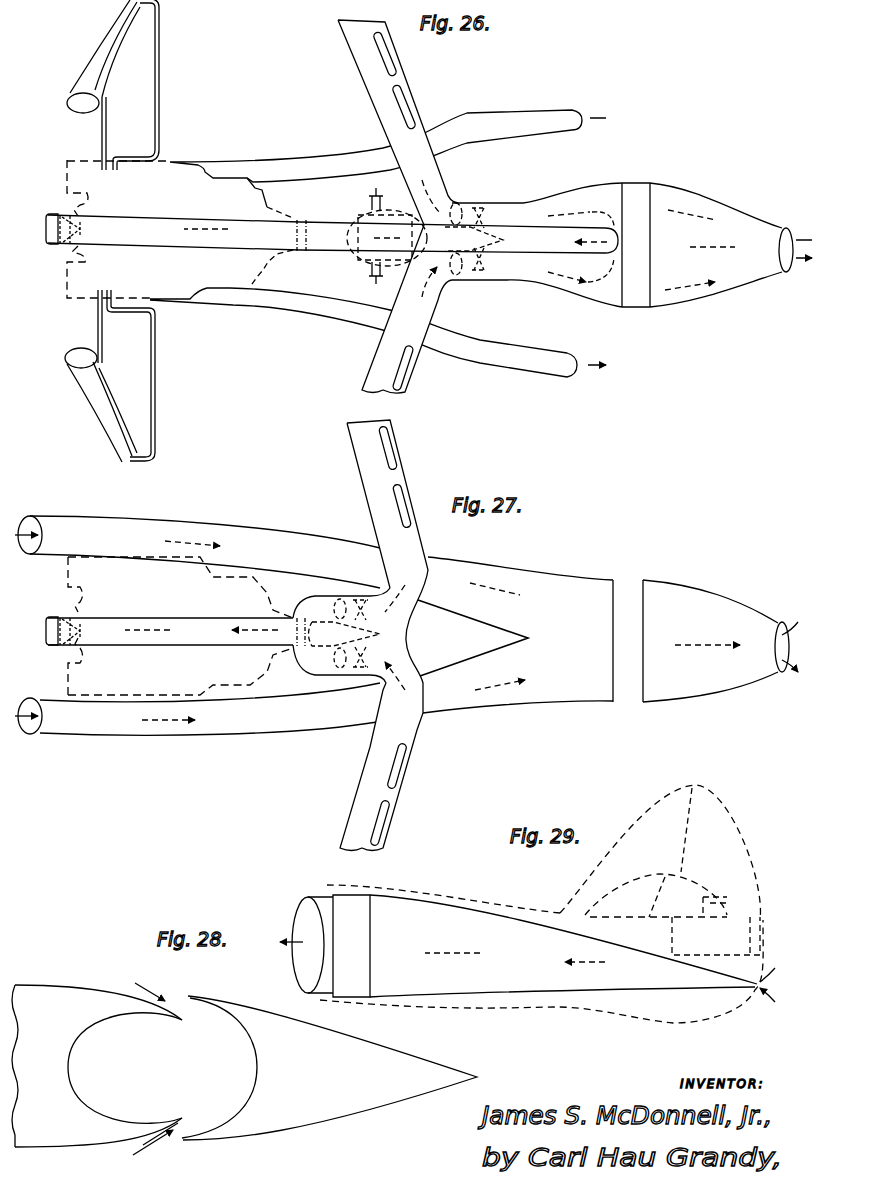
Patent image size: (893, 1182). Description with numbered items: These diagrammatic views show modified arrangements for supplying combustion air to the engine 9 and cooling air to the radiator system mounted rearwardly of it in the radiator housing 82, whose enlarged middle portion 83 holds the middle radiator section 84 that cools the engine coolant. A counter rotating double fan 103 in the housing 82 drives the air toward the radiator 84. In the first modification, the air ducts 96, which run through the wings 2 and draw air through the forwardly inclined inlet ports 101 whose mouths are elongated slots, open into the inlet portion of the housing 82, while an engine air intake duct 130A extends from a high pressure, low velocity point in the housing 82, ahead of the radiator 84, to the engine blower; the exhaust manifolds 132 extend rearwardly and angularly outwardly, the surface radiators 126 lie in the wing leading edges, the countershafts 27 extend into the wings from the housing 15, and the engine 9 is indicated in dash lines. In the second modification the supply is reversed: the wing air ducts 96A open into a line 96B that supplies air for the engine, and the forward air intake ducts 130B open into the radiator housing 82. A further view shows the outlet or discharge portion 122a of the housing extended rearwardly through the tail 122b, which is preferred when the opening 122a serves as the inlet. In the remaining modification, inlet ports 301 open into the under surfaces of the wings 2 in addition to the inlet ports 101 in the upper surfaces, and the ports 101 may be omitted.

In FIG. 28, the wings 2 is at (390, 1041).
In FIG. 26, the engine 9 is at (67, 298).
In FIG. 27, the engine 9 is at (278, 607).
In FIG. 26, the housing 15 is at (357, 262).
In FIG. 26, the countershafts 27 is at (370, 199).
In FIG. 26, the radiator housing 82 is at (515, 278).
In FIG. 27, the radiator housing 82 is at (578, 700).
In FIG. 26, the enlarged middle portion 83 is at (662, 190).
In FIG. 27, the enlarged middle portion 83 is at (668, 703).
In FIG. 26, the middle radiator section 84 is at (634, 308).
In FIG. 27, the middle radiator section 84 is at (626, 703).
In FIG. 26, the air ducts 96 is at (406, 82).
In FIG. 28, the air ducts 96 is at (162, 1068).
In FIG. 27, the wing air ducts 96A is at (372, 492).
In FIG. 27, the line 96B is at (128, 642).
In FIG. 26, the inlet ports 101 is at (388, 104).
In FIG. 27, the inlet ports 101 is at (400, 500).
In FIG. 28, the inlet ports 101 is at (173, 1003).
In FIG. 26, the counter rotating double fan 103 is at (492, 222).
In FIG. 29, the outlet or discharge portion 122a is at (566, 985).
In FIG. 29, the tail 122b is at (761, 918).
In FIG. 26, the surface radiators 126 is at (96, 66).
In FIG. 26, the engine air intake duct 130A is at (230, 245).
In FIG. 27, the forward air intake ducts 130B is at (88, 523).
In FIG. 26, the exhaust manifolds 132 is at (515, 112).
In FIG. 28, the inlet ports 301 is at (170, 1140).